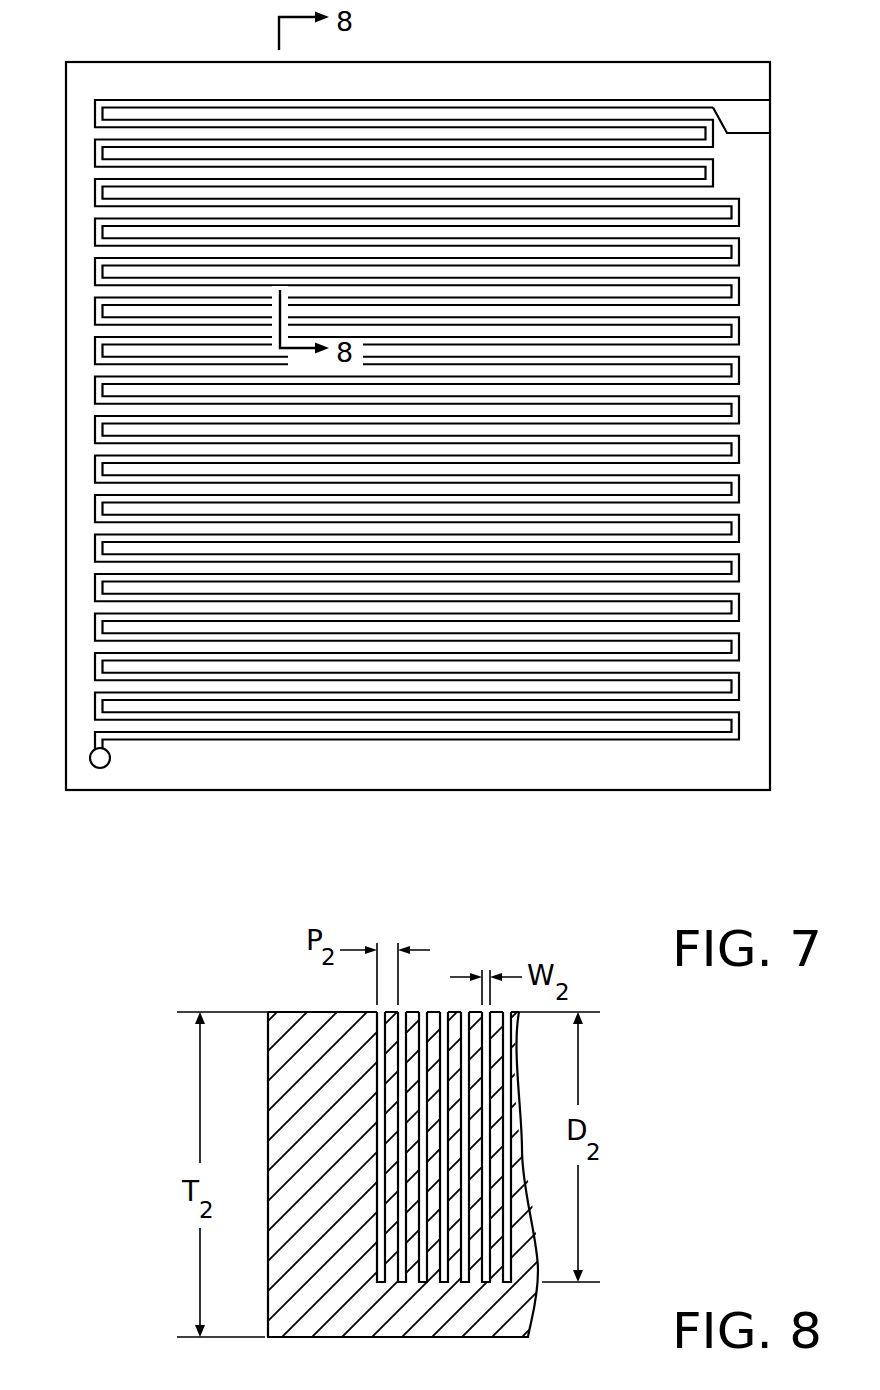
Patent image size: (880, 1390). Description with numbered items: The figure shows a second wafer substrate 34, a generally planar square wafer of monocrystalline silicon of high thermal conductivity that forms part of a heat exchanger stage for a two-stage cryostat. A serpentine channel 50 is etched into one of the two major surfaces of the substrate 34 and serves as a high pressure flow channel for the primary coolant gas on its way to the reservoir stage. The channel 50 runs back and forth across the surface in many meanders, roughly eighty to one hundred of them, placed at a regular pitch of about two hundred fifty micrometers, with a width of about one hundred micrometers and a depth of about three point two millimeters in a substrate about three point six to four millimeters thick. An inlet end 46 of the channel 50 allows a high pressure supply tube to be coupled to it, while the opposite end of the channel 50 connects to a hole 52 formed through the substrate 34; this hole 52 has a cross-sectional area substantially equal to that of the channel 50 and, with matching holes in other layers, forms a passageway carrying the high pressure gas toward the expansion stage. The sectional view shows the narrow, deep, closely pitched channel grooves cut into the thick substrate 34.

In FIG. 7, the second wafer substrate 34 is at (66, 150).
In FIG. 8, the second wafer substrate 34 is at (316, 1012).
In FIG. 7, the serpentine channel 50 is at (147, 100).
In FIG. 8, the serpentine channel 50 is at (436, 1040).
In FIG. 7, the inlet end 46 is at (752, 117).
In FIG. 7, the hole 52 is at (97, 768).